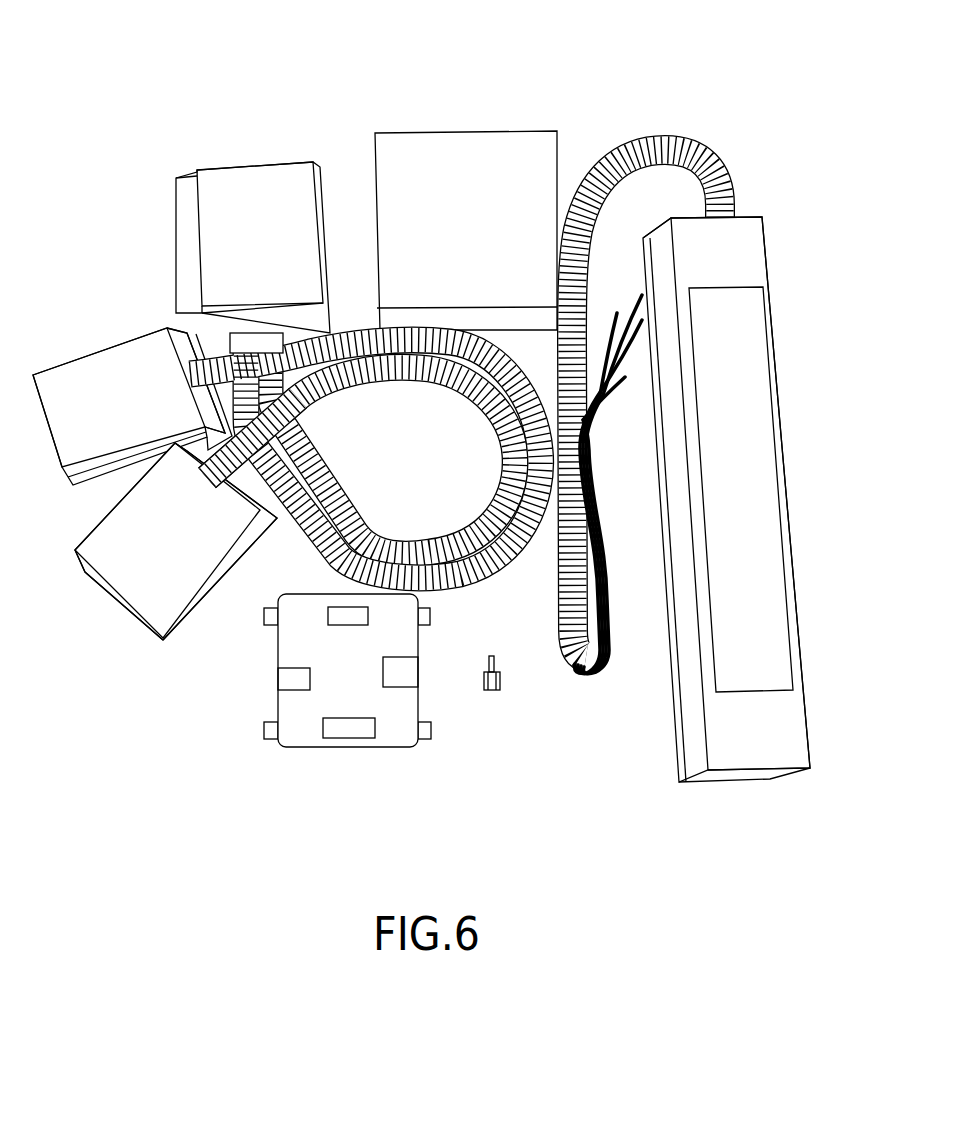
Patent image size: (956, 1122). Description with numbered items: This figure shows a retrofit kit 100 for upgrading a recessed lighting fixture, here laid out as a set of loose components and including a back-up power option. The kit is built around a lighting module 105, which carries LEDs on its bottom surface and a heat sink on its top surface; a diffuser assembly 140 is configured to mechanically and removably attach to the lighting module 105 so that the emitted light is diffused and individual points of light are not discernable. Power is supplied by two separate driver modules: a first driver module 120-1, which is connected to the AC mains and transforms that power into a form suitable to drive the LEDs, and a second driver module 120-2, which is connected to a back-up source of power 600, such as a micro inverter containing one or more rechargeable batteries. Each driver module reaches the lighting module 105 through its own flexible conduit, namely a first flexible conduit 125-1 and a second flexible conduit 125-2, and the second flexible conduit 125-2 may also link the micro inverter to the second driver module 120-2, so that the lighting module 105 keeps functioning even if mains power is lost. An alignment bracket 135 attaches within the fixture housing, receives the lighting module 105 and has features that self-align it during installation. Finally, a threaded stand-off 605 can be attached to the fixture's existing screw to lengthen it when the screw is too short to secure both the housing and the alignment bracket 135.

The retrofit kit 100 is at (141, 88).
The lighting module 105 is at (185, 228).
The first driver module 120-1 is at (148, 595).
The second driver module 120-2 is at (70, 367).
The first flexible conduit 125-1 is at (305, 455).
The second flexible conduit 125-2 is at (302, 520).
The alignment bracket 135 is at (410, 748).
The diffuser assembly 140 is at (523, 150).
The back-up source of power 600 is at (765, 462).
The threaded stand-off 605 is at (500, 679).